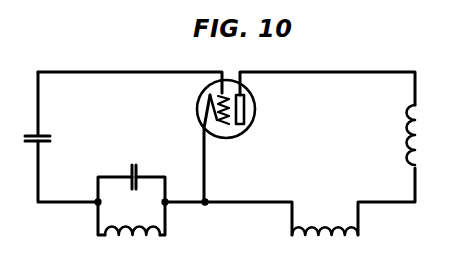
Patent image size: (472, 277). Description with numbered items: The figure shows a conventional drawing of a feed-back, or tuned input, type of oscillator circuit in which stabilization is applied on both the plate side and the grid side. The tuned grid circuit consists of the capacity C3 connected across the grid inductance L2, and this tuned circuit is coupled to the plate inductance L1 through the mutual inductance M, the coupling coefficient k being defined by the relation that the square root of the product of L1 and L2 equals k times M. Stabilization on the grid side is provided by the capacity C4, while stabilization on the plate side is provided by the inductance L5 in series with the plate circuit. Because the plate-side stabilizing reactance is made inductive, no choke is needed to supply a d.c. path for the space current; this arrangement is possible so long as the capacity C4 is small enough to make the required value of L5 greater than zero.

The grid-side stabilizing capacity C4 is at (49, 107).
The tuning capacity C3 is at (124, 169).
The grid inductance L2 is at (132, 245).
The plate inductance L1 is at (325, 244).
The plate-side stabilizing inductance L5 is at (396, 135).
The mutual inductance M is at (290, 234).